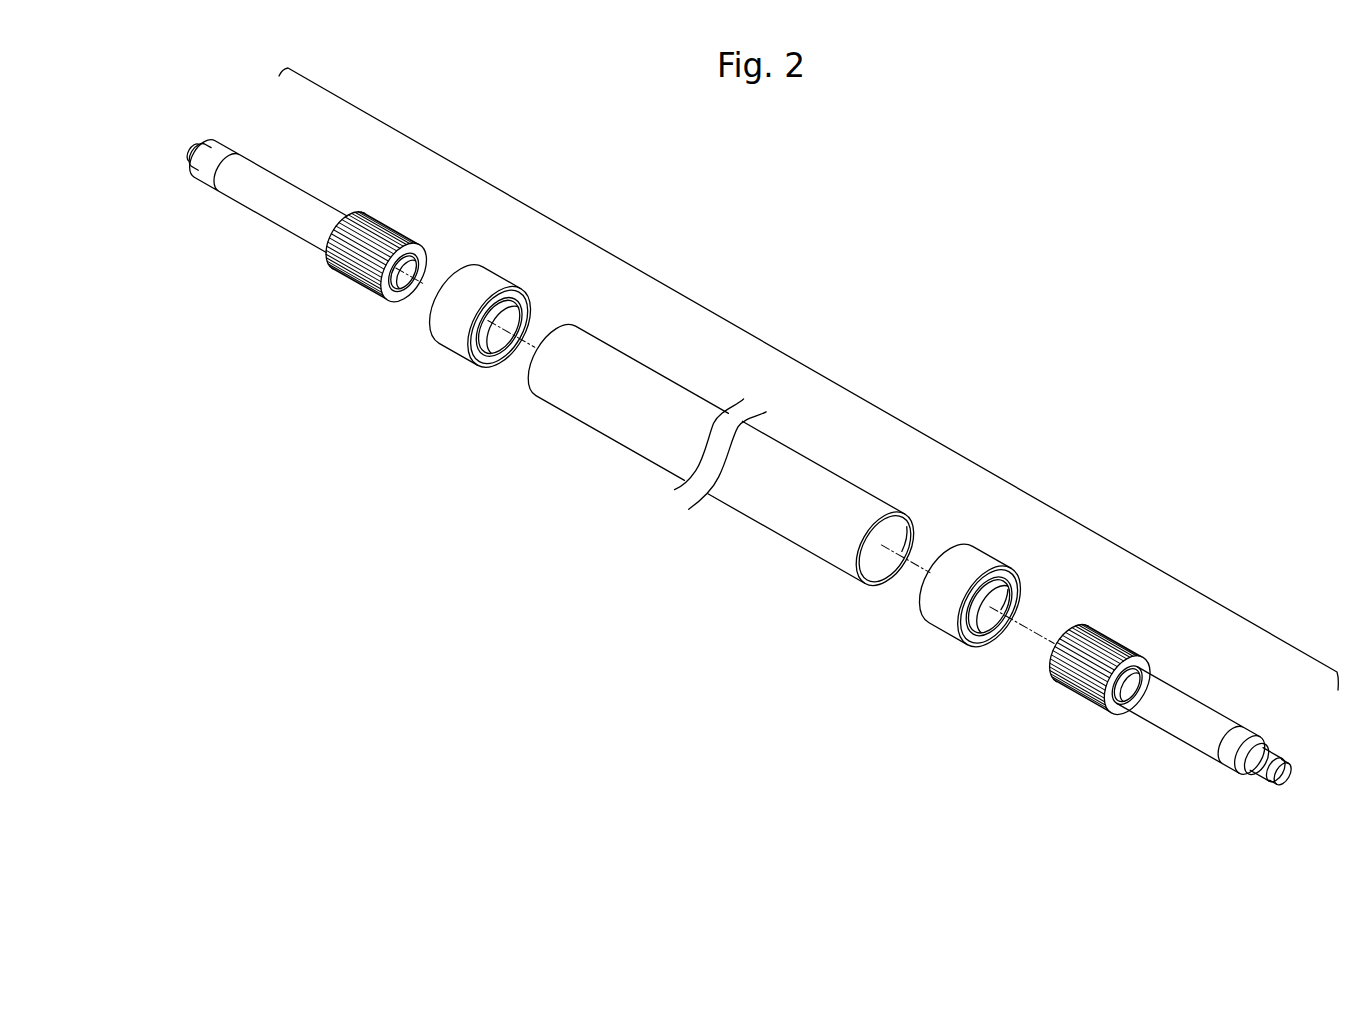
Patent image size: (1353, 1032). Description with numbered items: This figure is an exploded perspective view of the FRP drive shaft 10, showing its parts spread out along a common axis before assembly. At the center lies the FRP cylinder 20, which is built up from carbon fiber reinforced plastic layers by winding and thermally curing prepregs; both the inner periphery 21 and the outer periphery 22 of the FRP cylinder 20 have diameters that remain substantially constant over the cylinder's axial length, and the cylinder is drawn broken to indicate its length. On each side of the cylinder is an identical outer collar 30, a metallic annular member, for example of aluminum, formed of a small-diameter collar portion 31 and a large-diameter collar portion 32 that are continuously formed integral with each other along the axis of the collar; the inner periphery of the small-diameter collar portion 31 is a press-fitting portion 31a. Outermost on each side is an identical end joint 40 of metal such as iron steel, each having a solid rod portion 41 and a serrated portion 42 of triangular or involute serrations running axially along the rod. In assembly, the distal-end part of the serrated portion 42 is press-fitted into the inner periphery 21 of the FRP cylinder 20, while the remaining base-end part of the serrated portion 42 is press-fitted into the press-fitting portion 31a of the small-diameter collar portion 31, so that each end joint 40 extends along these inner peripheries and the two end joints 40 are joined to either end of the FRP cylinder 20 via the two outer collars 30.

The FRP drive shaft 10 is at (930, 441).
The FRP cylinder 20 is at (738, 451).
The inner periphery of the FRP cylinder 21 is at (900, 537).
The outer periphery of the FRP cylinder 22 is at (633, 423).
The outer collar 30 is at (734, 469).
The small-diameter collar portion 31 is at (428, 310).
The press-fitting portion 31a is at (1012, 600).
The large-diameter collar portion 32 is at (457, 337).
The end joint 40 is at (739, 464).
The solid rod portion 41 is at (268, 207).
The serrated portion 42 is at (347, 277).